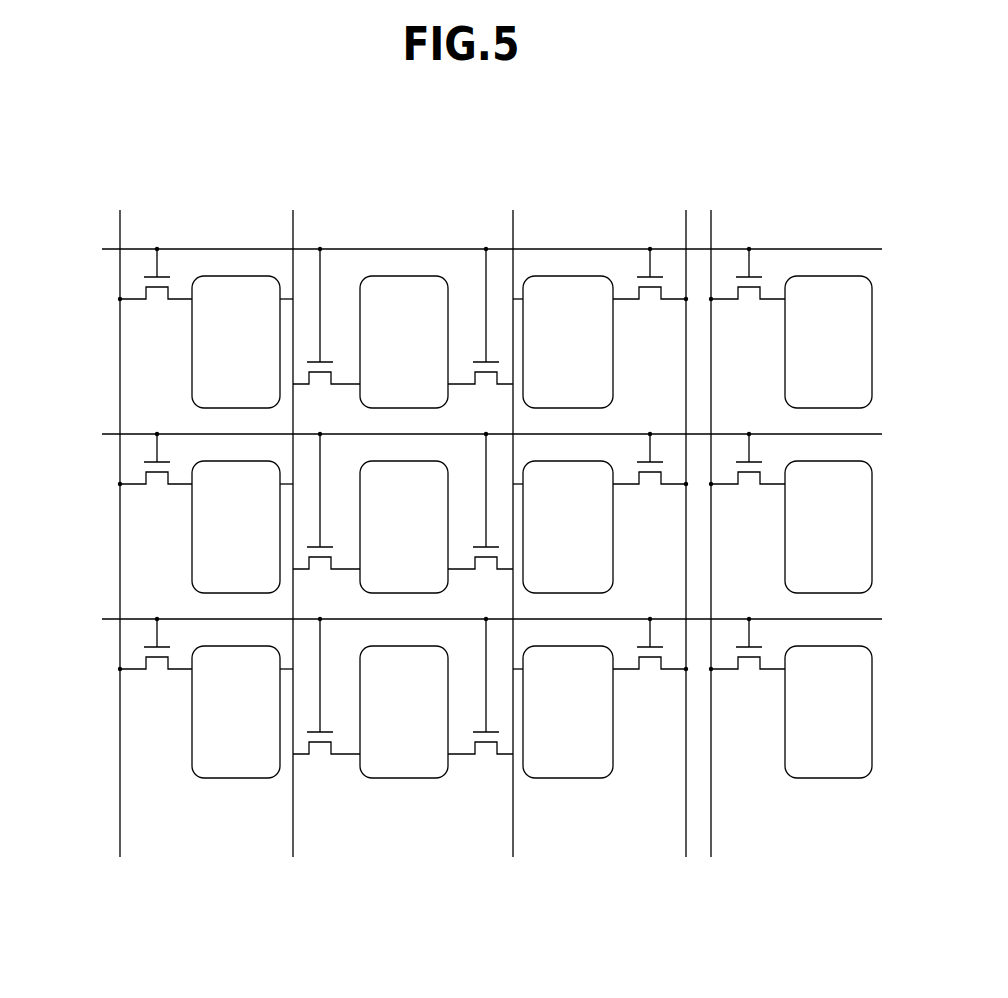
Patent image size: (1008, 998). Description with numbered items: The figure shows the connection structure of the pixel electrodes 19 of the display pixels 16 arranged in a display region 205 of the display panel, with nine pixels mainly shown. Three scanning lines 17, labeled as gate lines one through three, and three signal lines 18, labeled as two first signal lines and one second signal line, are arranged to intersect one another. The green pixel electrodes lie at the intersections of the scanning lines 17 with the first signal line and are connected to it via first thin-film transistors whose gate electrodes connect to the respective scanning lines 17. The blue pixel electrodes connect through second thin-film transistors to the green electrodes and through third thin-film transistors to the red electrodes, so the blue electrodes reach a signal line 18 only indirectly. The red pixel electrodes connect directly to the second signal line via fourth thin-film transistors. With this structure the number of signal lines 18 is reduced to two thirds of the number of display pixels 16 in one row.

The display pixel 16 is at (202, 271).
The scanning line 17 is at (415, 248).
The signal line 18 is at (120, 371).
The pixel electrode 19 is at (224, 276).
The display region 205 is at (823, 170).